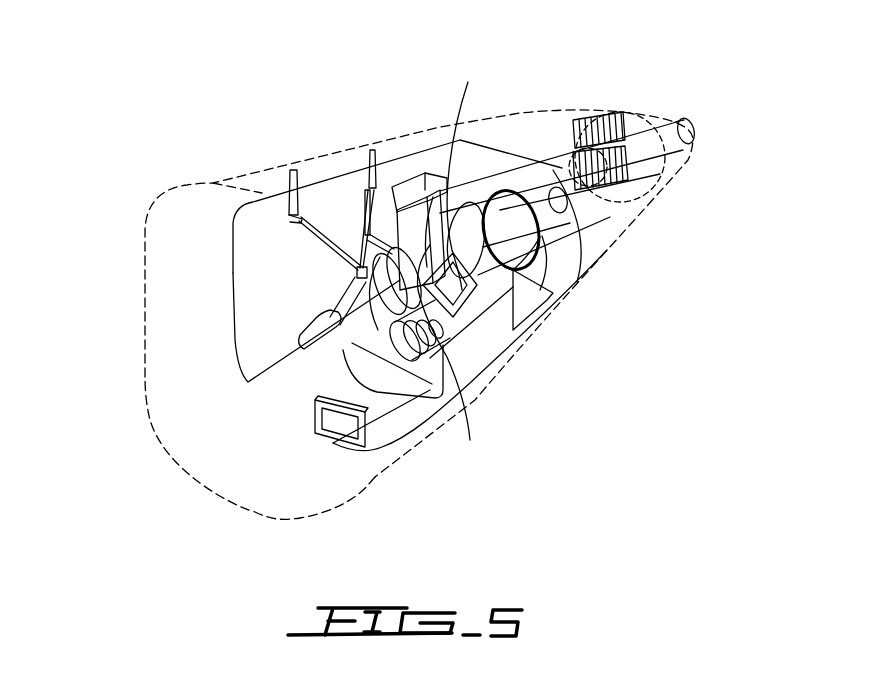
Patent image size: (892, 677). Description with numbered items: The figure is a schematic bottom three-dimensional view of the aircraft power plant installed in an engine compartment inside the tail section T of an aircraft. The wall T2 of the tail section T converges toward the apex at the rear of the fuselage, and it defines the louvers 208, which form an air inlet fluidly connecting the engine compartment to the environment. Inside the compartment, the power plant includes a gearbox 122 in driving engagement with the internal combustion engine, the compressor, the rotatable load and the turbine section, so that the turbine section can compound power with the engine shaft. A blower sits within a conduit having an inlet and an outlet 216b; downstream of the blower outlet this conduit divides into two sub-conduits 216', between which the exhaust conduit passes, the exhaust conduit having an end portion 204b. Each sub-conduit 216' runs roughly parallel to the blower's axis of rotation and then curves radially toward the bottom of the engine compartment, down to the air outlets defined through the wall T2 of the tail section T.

The tail section T is at (253, 177).
The wall T2 is at (198, 276).
The gearbox 122 is at (353, 350).
The tube 204b is at (688, 121).
The louvers 208 is at (585, 143).
The sub-conduits 216' is at (544, 262).
The outlet 216b is at (463, 310).